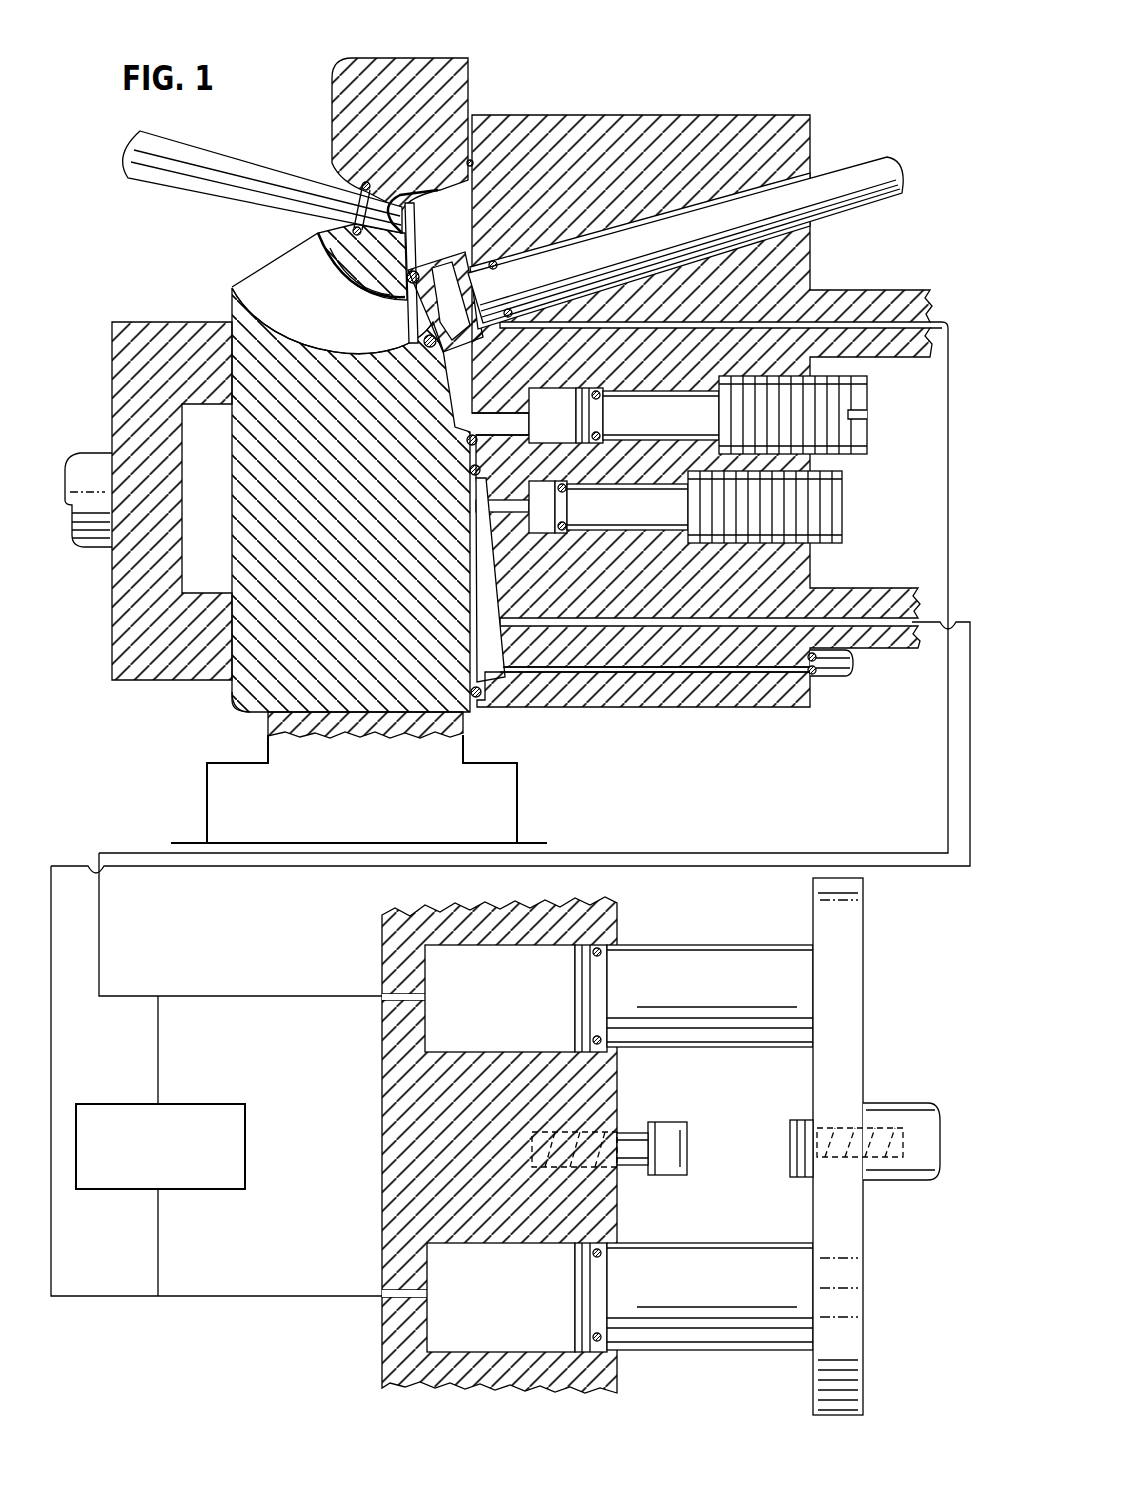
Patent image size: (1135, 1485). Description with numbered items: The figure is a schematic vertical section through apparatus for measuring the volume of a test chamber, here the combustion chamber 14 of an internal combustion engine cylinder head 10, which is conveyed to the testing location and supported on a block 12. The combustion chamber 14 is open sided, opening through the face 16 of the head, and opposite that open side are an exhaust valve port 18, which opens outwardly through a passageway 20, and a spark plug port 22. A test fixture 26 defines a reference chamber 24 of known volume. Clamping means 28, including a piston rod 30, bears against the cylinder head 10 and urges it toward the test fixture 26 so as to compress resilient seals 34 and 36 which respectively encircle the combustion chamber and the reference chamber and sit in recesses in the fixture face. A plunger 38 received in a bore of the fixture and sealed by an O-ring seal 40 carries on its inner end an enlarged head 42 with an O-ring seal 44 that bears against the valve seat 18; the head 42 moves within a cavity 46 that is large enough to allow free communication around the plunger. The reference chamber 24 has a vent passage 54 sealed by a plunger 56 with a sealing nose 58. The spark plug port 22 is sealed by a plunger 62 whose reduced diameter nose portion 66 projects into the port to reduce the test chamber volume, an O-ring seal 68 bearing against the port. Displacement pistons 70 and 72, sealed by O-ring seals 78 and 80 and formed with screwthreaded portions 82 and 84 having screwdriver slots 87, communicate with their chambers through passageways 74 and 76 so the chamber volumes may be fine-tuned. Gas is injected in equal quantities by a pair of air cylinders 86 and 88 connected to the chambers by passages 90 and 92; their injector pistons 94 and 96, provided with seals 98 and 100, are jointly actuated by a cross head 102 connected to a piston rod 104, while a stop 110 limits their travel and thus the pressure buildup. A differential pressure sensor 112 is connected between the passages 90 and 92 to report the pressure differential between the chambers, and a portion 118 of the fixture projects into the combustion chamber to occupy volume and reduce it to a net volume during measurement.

The cylinder head 10 is at (236, 694).
The block 12 is at (368, 807).
The combustion chamber 14 is at (455, 100).
The face 16 is at (468, 80).
The exhaust valve port 18 is at (405, 295).
The passageway 20 is at (328, 310).
The spark plug port 22 is at (360, 190).
The reference chamber 24 is at (487, 655).
The test fixture 26 is at (725, 700).
The clamping means 28 is at (160, 335).
The piston rod 30 is at (84, 453).
The resilient seal 34 is at (525, 150).
The resilient seal 36 is at (472, 475).
The plunger 38 is at (471, 130).
The O-ring seal 40 is at (520, 280).
The enlarged head 42 is at (458, 262).
The O-ring seal 44 is at (430, 330).
The cavity 46 is at (497, 265).
The vent passage 54 is at (625, 672).
The plunger 56 is at (860, 689).
The sealing nose 58 is at (816, 678).
The plunger 62 is at (200, 170).
The nose portion 66 is at (345, 162).
The O-ring seal 68 is at (318, 234).
The displacement piston 70 is at (729, 441).
The displacement piston 72 is at (716, 508).
The passageway 74 is at (490, 411).
The passageway 76 is at (500, 505).
The O-ring seal 78 is at (595, 390).
The O-ring seal 80 is at (565, 486).
The screwthreaded portion 82 is at (862, 400).
The screwthreaded portion 84 is at (845, 490).
The air cylinder 86 is at (515, 980).
The screwdriver slot 87 is at (865, 420).
The air cylinder 88 is at (430, 1330).
The passage 90 is at (685, 853).
The passage 92 is at (780, 866).
The injector piston 94 is at (725, 1010).
The injector piston 96 is at (712, 1275).
The seal 98 is at (607, 945).
The seal 100 is at (607, 1350).
The cross head 102 is at (860, 1022).
The piston rod 104 is at (905, 1103).
The stop 110 is at (688, 1140).
The differential pressure sensor 112 is at (245, 1138).
The projecting portion 118 is at (355, 277).